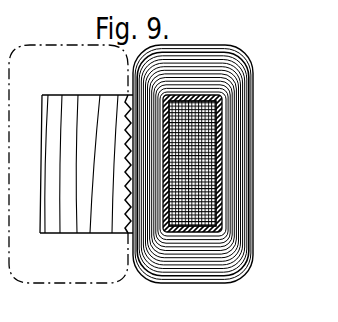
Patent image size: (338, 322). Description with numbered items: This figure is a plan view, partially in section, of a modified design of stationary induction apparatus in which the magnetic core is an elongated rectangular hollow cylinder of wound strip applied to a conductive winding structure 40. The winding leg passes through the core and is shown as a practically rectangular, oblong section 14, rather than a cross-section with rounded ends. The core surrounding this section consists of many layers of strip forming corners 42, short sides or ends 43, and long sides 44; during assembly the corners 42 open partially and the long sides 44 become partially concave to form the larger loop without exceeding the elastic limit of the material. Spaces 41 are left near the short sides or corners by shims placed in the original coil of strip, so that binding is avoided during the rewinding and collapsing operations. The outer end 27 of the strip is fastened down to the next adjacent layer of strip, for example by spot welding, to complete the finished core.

The section 14 is at (204, 120).
The outer end of the strip 27 is at (253, 168).
The conductive winding structure 40 is at (79, 233).
The spaces 41 is at (198, 62).
The corners 42 is at (249, 58).
The short sides or ends 43 is at (197, 291).
The long sides 44 is at (253, 138).